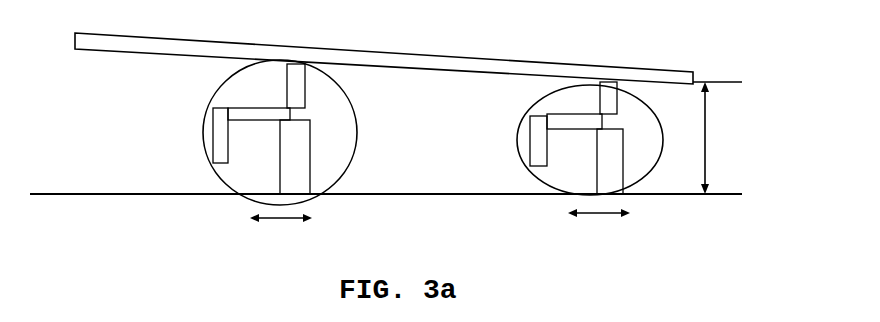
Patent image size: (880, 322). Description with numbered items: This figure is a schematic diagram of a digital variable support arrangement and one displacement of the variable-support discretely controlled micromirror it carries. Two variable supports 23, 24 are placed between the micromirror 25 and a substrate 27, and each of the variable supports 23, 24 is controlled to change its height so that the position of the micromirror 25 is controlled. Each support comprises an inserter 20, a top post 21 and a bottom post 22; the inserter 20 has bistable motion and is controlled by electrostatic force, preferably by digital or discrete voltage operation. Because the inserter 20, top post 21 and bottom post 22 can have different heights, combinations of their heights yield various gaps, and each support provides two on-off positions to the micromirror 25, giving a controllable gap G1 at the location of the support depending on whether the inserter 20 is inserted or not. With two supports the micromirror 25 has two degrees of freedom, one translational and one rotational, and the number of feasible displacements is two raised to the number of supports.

The inserter 20 is at (249, 110).
The top post 21 is at (305, 65).
The bottom post 22 is at (295, 167).
The variable support 23 is at (198, 165).
The variable support 24 is at (648, 172).
The micromirror 25 is at (466, 63).
The substrate 27 is at (478, 199).
The gap G1 is at (724, 138).